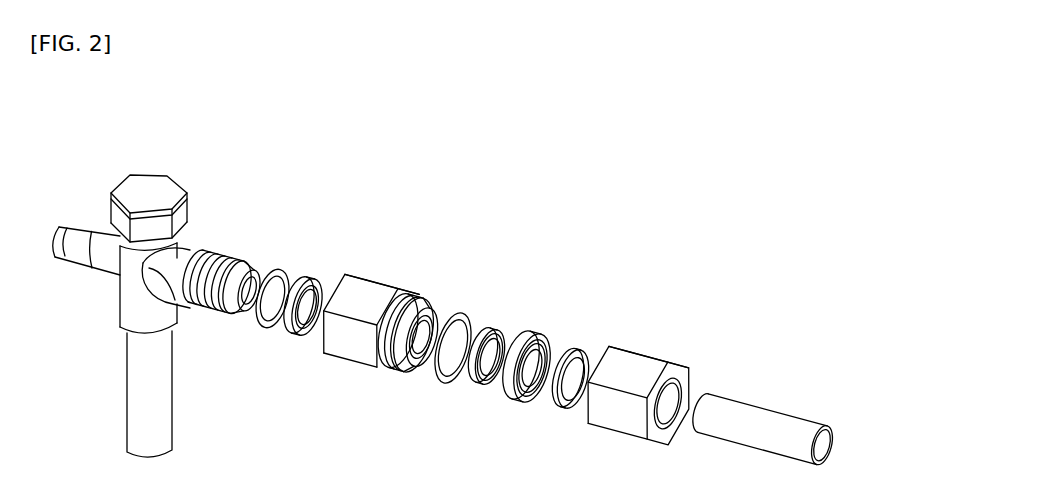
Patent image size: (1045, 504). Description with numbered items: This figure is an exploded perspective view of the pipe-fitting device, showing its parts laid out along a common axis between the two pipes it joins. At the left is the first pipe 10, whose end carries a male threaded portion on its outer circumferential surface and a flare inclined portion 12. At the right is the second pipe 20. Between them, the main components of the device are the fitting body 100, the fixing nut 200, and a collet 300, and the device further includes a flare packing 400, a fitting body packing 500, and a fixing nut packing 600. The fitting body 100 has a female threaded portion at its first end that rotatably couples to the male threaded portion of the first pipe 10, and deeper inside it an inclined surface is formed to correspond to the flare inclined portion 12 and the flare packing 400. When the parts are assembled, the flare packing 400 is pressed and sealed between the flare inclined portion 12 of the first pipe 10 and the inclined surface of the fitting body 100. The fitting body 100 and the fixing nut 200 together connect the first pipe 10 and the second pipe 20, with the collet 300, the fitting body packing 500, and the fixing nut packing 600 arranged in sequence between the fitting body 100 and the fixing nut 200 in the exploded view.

The first pipe 10 is at (185, 288).
The flare inclined portion 12 is at (262, 260).
The second pipe 20 is at (752, 417).
The fitting body 100 is at (353, 259).
The fixing nut 200 is at (634, 370).
The collet 300 is at (527, 330).
The flare packing 400 is at (303, 259).
The fitting body packing 500 is at (483, 328).
The fixing nut packing 600 is at (571, 350).